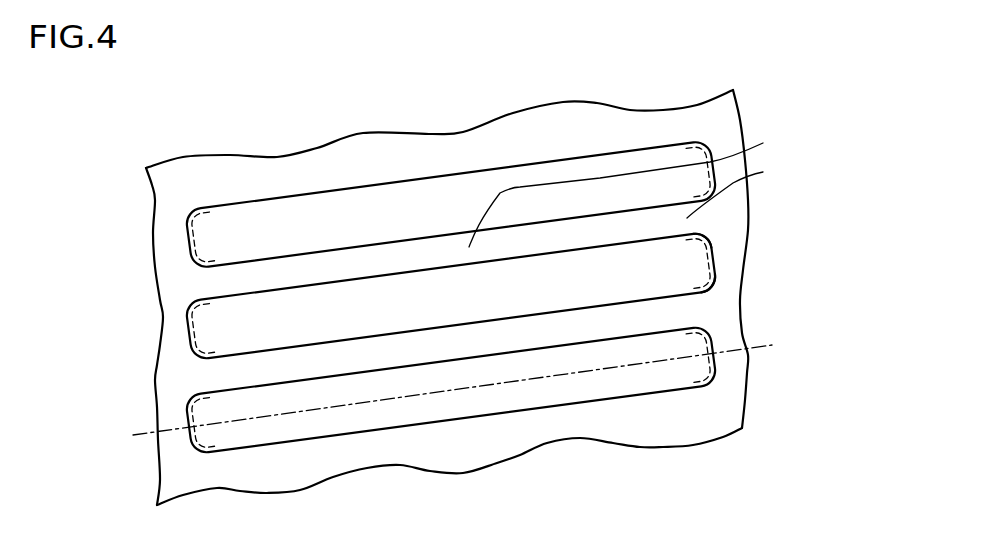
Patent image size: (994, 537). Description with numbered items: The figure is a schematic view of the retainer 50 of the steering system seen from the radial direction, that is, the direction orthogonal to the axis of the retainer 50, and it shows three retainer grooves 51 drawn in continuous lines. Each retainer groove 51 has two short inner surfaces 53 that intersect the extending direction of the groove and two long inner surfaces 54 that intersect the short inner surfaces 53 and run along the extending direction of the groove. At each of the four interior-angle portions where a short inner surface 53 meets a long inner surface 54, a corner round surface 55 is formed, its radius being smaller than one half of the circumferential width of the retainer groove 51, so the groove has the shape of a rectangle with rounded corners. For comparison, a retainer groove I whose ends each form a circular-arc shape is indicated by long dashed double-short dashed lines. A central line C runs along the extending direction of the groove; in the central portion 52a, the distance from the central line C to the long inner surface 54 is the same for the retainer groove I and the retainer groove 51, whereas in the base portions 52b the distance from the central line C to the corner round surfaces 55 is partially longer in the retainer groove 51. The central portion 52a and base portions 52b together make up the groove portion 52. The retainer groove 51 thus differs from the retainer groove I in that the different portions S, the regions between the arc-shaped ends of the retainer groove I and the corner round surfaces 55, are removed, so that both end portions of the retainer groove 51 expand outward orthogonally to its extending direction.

The retainer 50 is at (275, 149).
The retainer groove 51 is at (413, 279).
The retainer groove portion 52 is at (673, 187).
The central portion 52a is at (644, 188).
The base portion 52b is at (753, 188).
The short inner surface 53 is at (712, 258).
The long inner surface 54 is at (444, 177).
The corner round surface 55 is at (712, 240).
The central line C is at (143, 430).
The different portion S is at (702, 140).
The retainer groove I is at (192, 217).